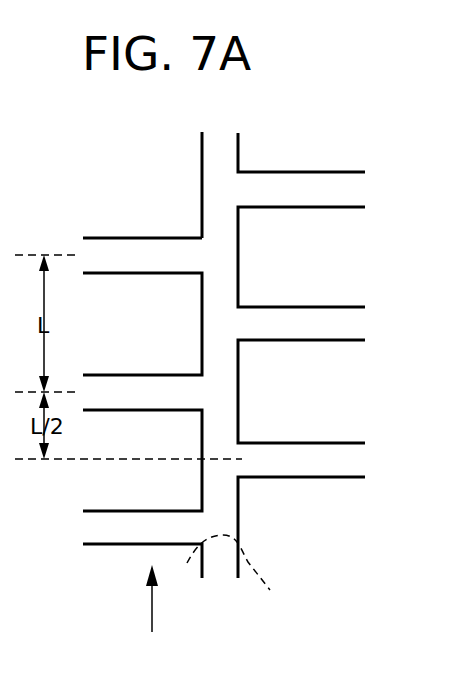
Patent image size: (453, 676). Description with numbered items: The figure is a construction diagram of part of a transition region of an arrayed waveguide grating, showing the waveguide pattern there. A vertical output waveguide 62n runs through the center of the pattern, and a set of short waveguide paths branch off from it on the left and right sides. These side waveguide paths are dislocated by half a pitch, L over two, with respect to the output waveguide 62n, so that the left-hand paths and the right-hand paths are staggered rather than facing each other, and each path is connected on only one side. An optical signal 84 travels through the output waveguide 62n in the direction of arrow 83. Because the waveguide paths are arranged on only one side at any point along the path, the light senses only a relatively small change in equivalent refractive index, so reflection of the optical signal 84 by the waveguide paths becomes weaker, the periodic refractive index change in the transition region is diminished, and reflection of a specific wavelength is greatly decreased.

The output waveguide 62n is at (218, 170).
The arrow 83 is at (150, 612).
The optical signal 84 is at (240, 580).